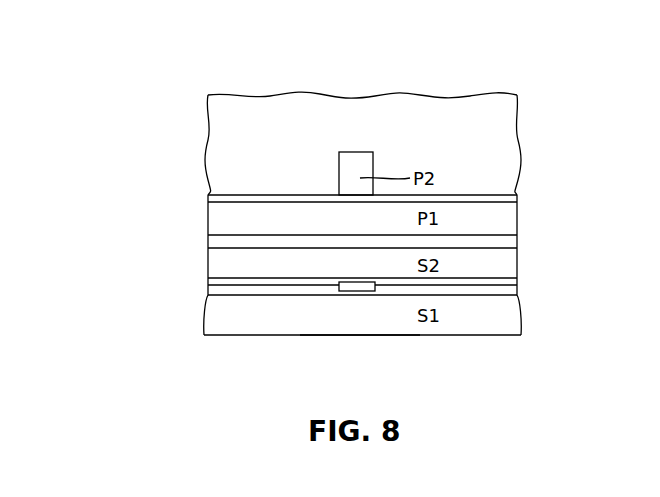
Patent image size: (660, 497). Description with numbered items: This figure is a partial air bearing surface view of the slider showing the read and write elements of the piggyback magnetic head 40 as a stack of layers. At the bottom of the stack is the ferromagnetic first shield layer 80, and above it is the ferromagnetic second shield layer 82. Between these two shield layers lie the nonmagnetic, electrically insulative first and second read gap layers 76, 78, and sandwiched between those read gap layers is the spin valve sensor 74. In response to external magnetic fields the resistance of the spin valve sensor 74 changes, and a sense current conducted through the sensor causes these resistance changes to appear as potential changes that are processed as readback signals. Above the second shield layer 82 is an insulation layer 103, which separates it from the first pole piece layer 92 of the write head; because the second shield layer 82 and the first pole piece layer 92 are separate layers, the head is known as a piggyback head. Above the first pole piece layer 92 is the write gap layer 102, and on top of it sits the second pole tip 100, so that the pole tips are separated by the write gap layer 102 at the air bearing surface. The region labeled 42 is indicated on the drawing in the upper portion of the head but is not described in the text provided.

The piggyback magnetic head 40 is at (537, 112).
The write head portion 42 is at (215, 123).
The second pole tip 100 is at (353, 162).
The write gap layer 102 is at (277, 197).
The first pole piece layer 92 is at (215, 218).
The insulation layer 103 is at (510, 243).
The second shield layer 82 is at (212, 268).
The first shield layer 80 is at (510, 317).
The first read gap layer 76 is at (267, 295).
The spin valve sensor 74 is at (357, 291).
The second read gap layer 78 is at (479, 282).